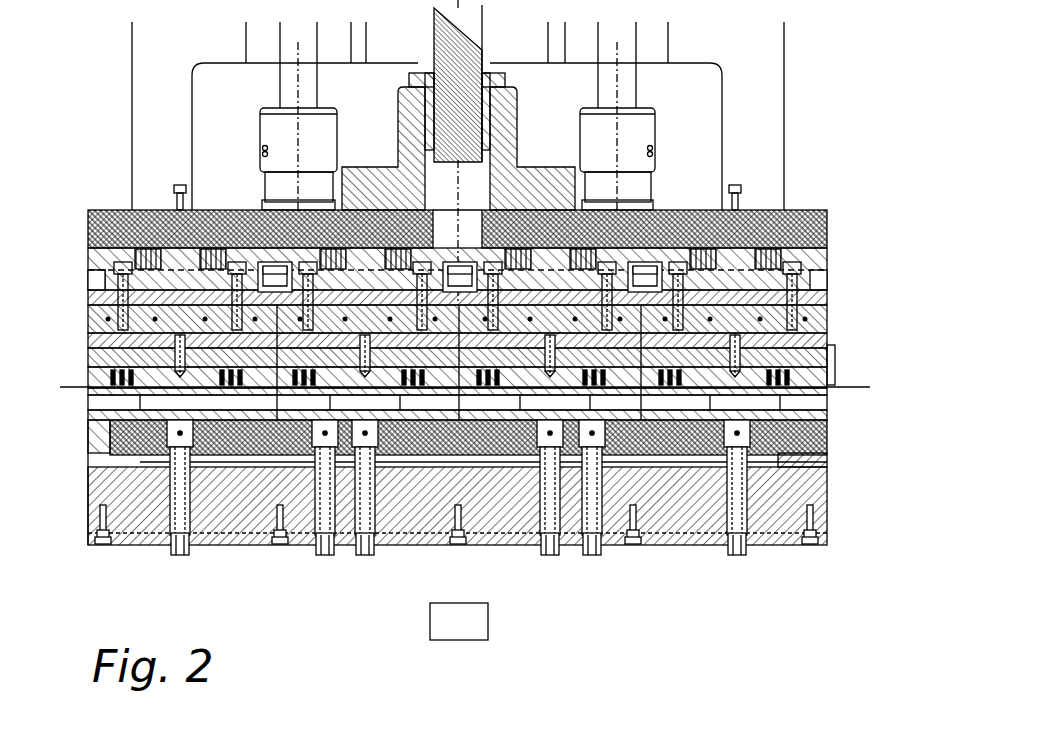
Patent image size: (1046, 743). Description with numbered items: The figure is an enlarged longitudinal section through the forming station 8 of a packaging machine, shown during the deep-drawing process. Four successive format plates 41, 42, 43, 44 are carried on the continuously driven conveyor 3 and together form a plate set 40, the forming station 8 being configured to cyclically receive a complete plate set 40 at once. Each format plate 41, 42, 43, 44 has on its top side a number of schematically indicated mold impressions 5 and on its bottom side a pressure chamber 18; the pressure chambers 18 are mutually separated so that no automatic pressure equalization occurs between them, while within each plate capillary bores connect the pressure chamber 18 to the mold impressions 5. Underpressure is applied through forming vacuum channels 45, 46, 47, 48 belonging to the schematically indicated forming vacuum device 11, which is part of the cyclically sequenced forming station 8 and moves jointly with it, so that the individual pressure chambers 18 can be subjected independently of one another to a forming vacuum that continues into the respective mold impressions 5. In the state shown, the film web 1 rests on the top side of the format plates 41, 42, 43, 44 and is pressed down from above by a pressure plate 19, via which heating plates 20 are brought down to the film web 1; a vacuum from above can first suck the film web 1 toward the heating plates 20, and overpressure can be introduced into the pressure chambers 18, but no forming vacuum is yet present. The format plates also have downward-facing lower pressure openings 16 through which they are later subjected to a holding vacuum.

The film web 1 is at (80, 387).
The conveyor 3 is at (828, 417).
The mold impressions 5 is at (118, 546).
The forming station 8 is at (788, 617).
The forming vacuum device 11 is at (469, 631).
The lower pressure openings 16 is at (152, 546).
The pressure chamber 18 is at (207, 548).
The pressure plate 19 is at (803, 210).
The heating plates 20 is at (96, 333).
The plate set 40 is at (828, 400).
The format plate 41 is at (655, 548).
The format plate 42 is at (468, 548).
The format plate 43 is at (283, 546).
The format plate 44 is at (90, 488).
The forming vacuum channel 45 is at (738, 557).
The forming vacuum channel 46 is at (550, 557).
The forming vacuum channel 47 is at (368, 557).
The forming vacuum channel 48 is at (182, 557).